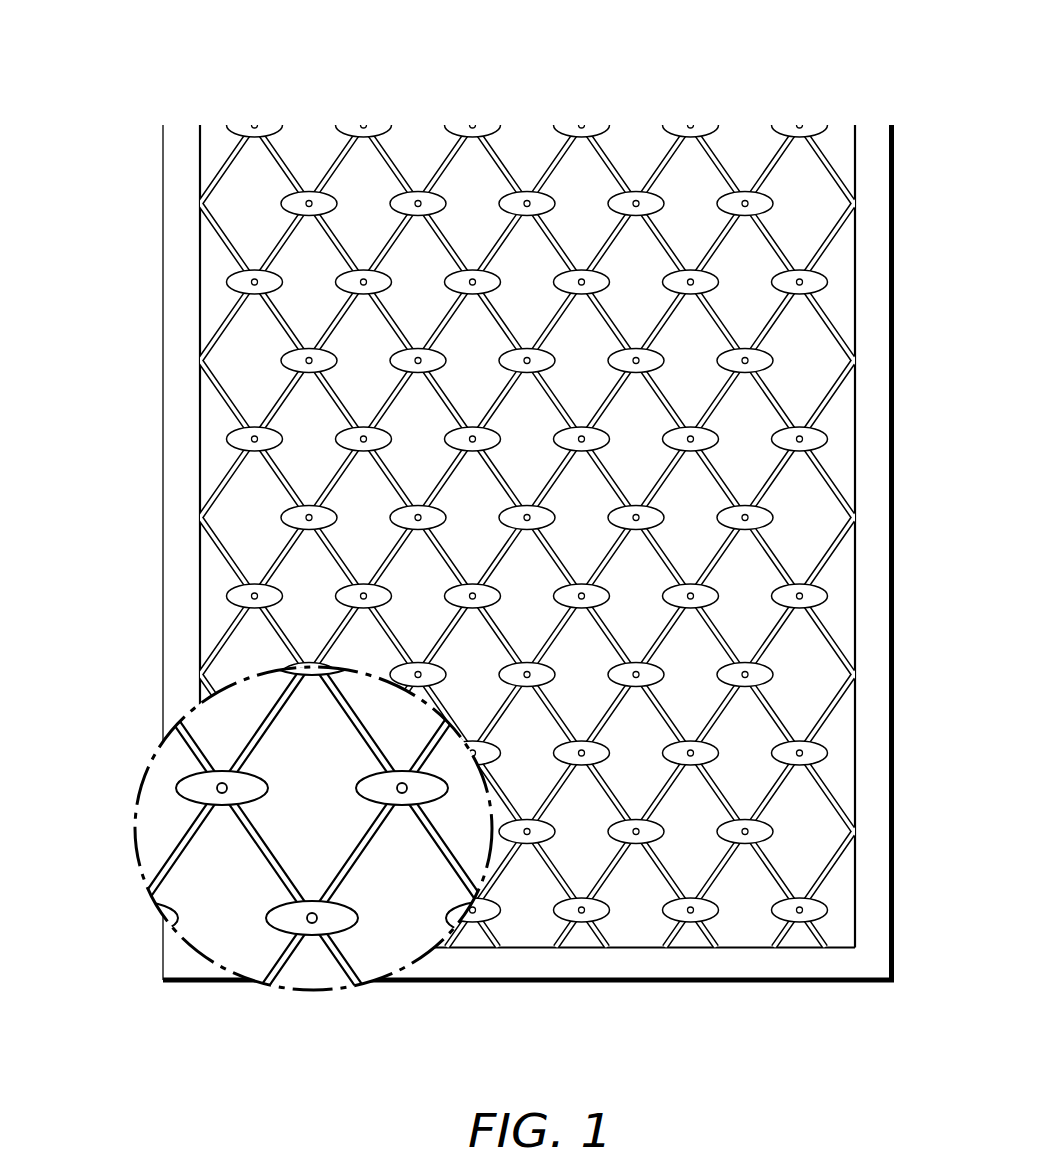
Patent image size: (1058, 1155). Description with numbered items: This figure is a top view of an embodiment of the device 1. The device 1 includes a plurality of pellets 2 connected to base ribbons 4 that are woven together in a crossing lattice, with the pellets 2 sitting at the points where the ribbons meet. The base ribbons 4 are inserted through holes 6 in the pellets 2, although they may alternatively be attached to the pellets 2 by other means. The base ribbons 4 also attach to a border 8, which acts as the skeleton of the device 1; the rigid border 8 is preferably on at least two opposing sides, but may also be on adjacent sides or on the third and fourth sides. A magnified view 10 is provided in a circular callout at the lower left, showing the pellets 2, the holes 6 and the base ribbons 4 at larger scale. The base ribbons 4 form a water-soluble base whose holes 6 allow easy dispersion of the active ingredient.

The device 1 is at (252, 78).
The pellets 2 is at (722, 200).
The base ribbons 4 is at (280, 558).
The holes 6 is at (745, 358).
The border 8 is at (172, 308).
The magnified view 10 is at (138, 757).